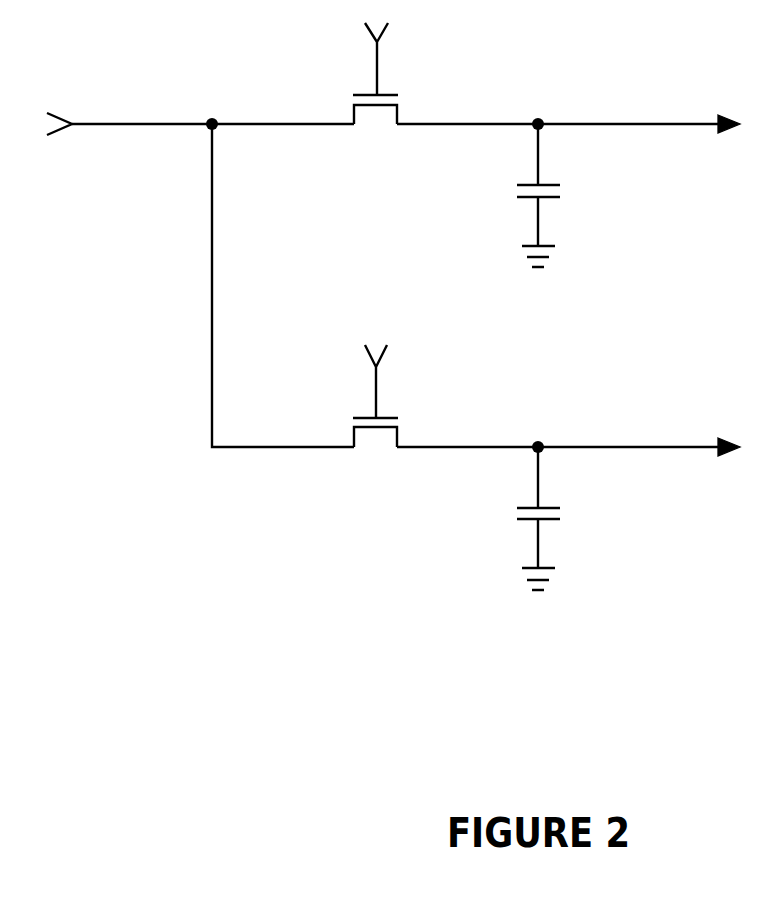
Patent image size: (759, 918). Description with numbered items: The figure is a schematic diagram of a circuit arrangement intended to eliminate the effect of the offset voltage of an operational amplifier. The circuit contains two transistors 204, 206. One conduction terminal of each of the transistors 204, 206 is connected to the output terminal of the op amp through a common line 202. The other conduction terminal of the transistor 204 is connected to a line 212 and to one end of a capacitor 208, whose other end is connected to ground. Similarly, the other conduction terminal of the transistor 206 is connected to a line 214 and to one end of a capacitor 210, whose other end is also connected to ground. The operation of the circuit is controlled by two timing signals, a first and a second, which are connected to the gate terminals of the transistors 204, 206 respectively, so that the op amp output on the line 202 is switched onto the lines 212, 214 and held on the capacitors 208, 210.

The line 202 is at (130, 124).
The transistor 204 is at (377, 106).
The transistor 206 is at (376, 429).
The capacitor 208 is at (556, 185).
The capacitor 210 is at (556, 508).
The line 212 is at (658, 124).
The line 214 is at (658, 447).